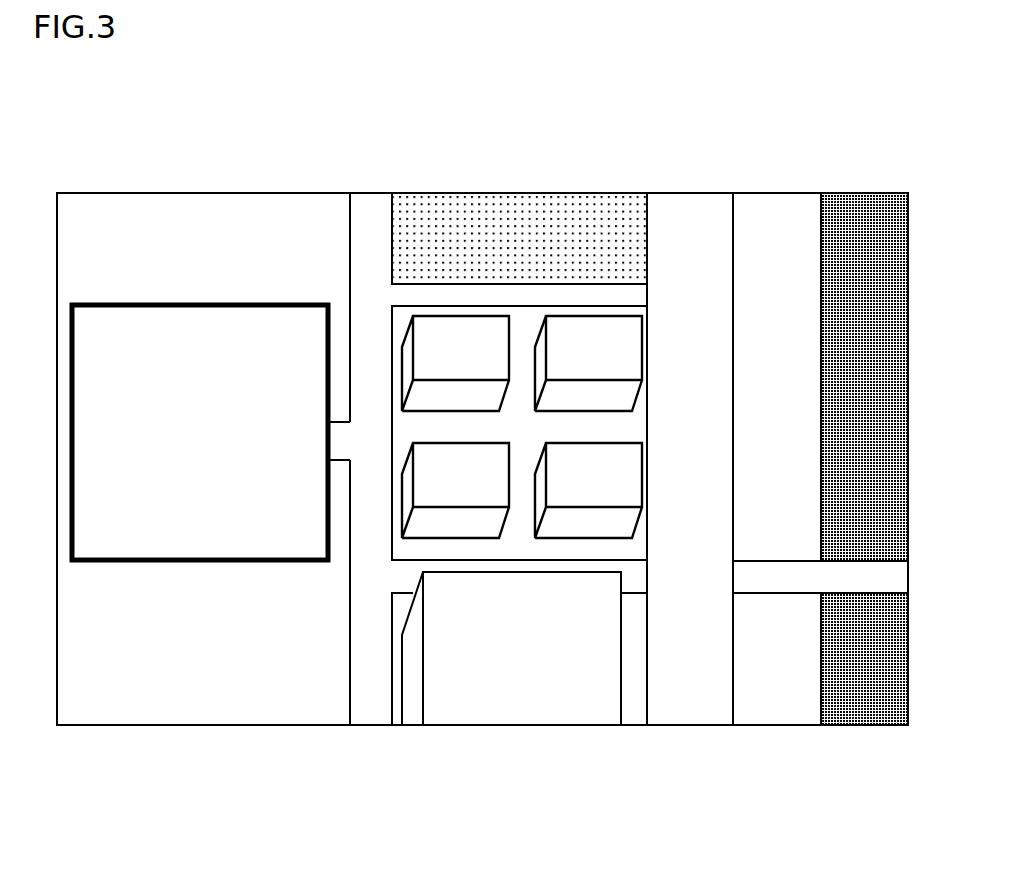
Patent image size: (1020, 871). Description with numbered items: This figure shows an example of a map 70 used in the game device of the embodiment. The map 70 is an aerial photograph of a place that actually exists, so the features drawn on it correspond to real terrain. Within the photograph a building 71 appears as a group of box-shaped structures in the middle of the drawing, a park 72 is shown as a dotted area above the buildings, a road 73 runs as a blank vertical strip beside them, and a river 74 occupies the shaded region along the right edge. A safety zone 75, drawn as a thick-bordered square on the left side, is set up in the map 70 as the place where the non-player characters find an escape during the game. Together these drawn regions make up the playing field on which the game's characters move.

The map 70 is at (862, 193).
The building 71 is at (462, 317).
The park 72 is at (583, 242).
The road 73 is at (690, 243).
The river 74 is at (848, 700).
The safety zone 75 is at (200, 318).